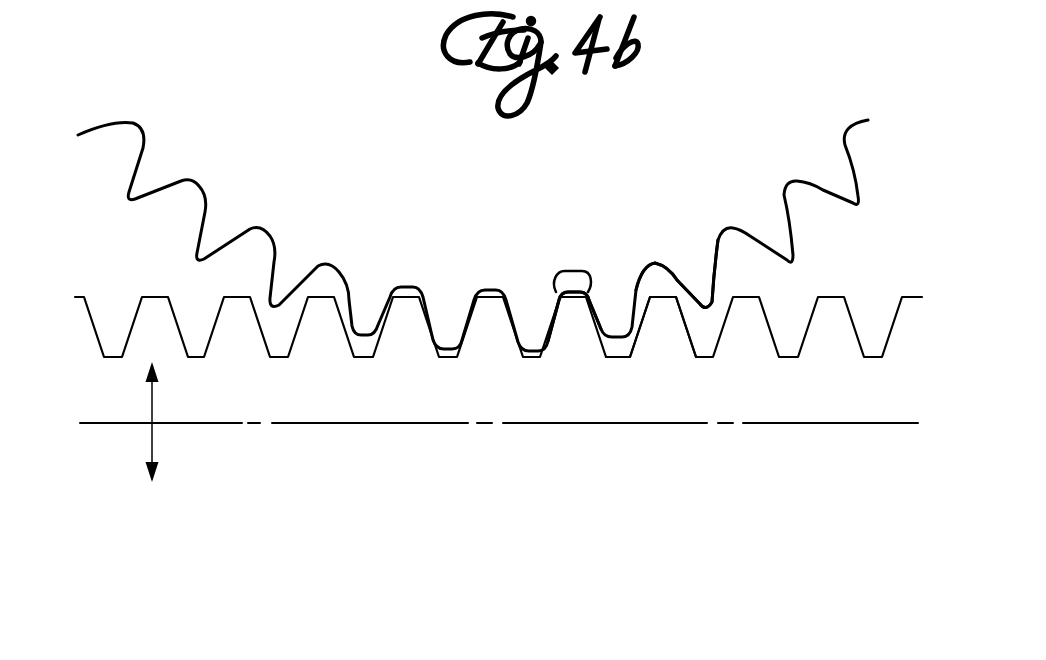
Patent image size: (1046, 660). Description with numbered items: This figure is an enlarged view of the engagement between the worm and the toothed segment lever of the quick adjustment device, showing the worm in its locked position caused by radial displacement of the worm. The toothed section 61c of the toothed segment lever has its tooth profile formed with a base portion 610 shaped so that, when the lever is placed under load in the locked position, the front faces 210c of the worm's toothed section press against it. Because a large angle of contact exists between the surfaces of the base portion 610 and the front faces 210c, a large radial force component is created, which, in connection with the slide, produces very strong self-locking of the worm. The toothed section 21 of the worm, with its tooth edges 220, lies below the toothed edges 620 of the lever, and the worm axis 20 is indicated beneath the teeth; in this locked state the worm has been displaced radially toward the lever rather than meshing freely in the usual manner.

The toothed section 61c is at (330, 235).
The base portion 610 is at (562, 255).
The toothed edges 620 is at (702, 246).
The front faces 210c is at (578, 310).
The tooth edges 220 is at (676, 343).
The toothed section 21 is at (742, 361).
The worm axis 20 is at (833, 424).